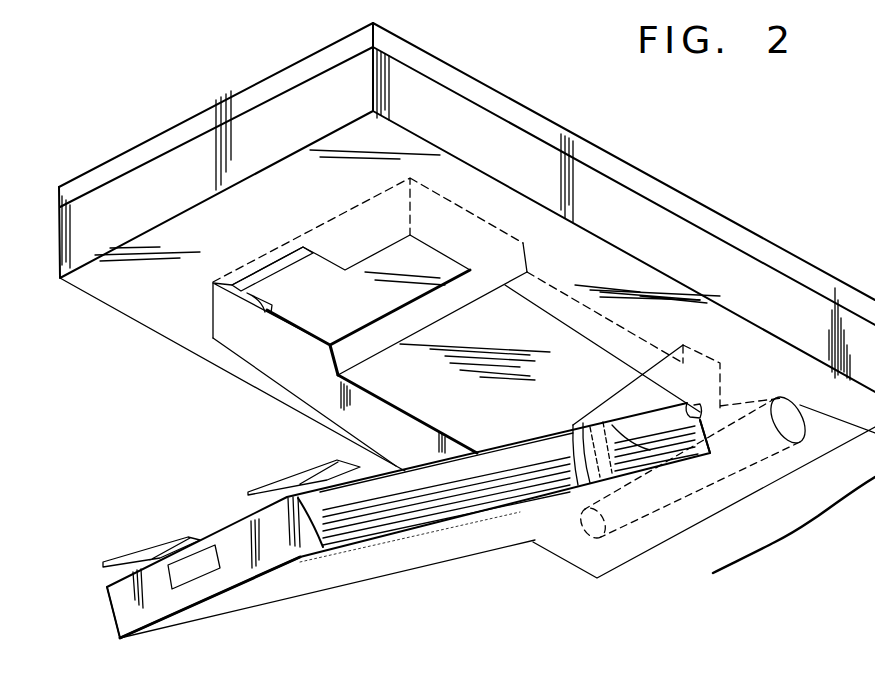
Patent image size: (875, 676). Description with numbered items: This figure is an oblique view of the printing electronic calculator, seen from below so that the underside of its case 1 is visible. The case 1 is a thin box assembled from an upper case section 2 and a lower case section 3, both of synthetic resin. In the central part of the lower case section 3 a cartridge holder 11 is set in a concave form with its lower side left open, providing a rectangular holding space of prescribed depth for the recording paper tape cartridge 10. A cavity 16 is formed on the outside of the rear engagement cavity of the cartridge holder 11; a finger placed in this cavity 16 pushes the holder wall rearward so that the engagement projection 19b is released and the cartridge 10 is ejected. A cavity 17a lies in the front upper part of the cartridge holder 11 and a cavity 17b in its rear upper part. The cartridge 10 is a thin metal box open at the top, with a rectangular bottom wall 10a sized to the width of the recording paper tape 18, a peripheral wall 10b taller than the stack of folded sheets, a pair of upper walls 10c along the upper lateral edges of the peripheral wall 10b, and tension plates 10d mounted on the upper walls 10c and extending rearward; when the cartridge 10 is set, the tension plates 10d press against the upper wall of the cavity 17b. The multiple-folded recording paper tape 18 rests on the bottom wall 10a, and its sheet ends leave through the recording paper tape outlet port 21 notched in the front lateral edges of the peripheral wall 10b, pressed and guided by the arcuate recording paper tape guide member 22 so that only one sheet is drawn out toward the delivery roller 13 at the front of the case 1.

The case 1 is at (165, 118).
The upper case section 2 is at (272, 90).
The lower case section 3 is at (118, 190).
The recording paper tape cartridge 10 is at (350, 563).
The bottom wall 10a is at (442, 552).
The peripheral wall 10b is at (123, 613).
The upper walls 10c is at (510, 440).
The tension plates 10d is at (143, 553).
The cartridge holder 11 is at (243, 353).
The delivery roller 13 is at (643, 510).
The cavity 16 is at (308, 277).
The cavity 17a is at (661, 387).
The cavity 17b is at (428, 263).
The recording paper tape 18 is at (500, 495).
The engagement projection 19b is at (195, 570).
The recording paper tape outlet port 21 is at (610, 480).
The recording paper tape guide member 22 is at (662, 427).